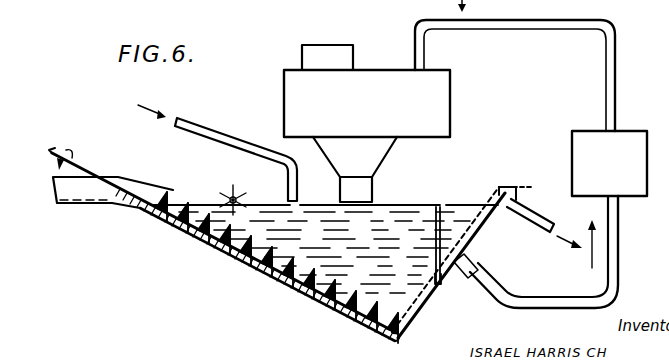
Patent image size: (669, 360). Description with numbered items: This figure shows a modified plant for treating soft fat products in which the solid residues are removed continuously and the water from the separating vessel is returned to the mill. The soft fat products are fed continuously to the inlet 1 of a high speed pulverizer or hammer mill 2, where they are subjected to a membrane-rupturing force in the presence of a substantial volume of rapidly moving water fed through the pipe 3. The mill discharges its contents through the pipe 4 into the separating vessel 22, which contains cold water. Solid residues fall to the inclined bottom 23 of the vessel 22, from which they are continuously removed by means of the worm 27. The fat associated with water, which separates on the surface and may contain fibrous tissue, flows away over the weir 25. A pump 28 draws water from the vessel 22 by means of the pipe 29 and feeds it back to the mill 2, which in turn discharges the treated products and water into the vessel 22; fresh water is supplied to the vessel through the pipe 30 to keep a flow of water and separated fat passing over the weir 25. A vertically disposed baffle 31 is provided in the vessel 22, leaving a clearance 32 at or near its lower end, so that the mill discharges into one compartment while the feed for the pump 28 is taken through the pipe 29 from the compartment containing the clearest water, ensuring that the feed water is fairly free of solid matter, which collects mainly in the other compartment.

The inlet 1 is at (343, 58).
The hammer mill 2 is at (450, 102).
The pipe 3 is at (518, 20).
The pipe 4 is at (372, 190).
The separating vessel 22 is at (335, 238).
The inclined bottom 23 is at (277, 244).
The weir 25 is at (505, 203).
The worm 27 is at (236, 255).
The pump 28 is at (582, 170).
The pipe 29 is at (553, 307).
The pipe 30 is at (217, 153).
The baffle 31 is at (441, 212).
The clearance 32 is at (436, 284).